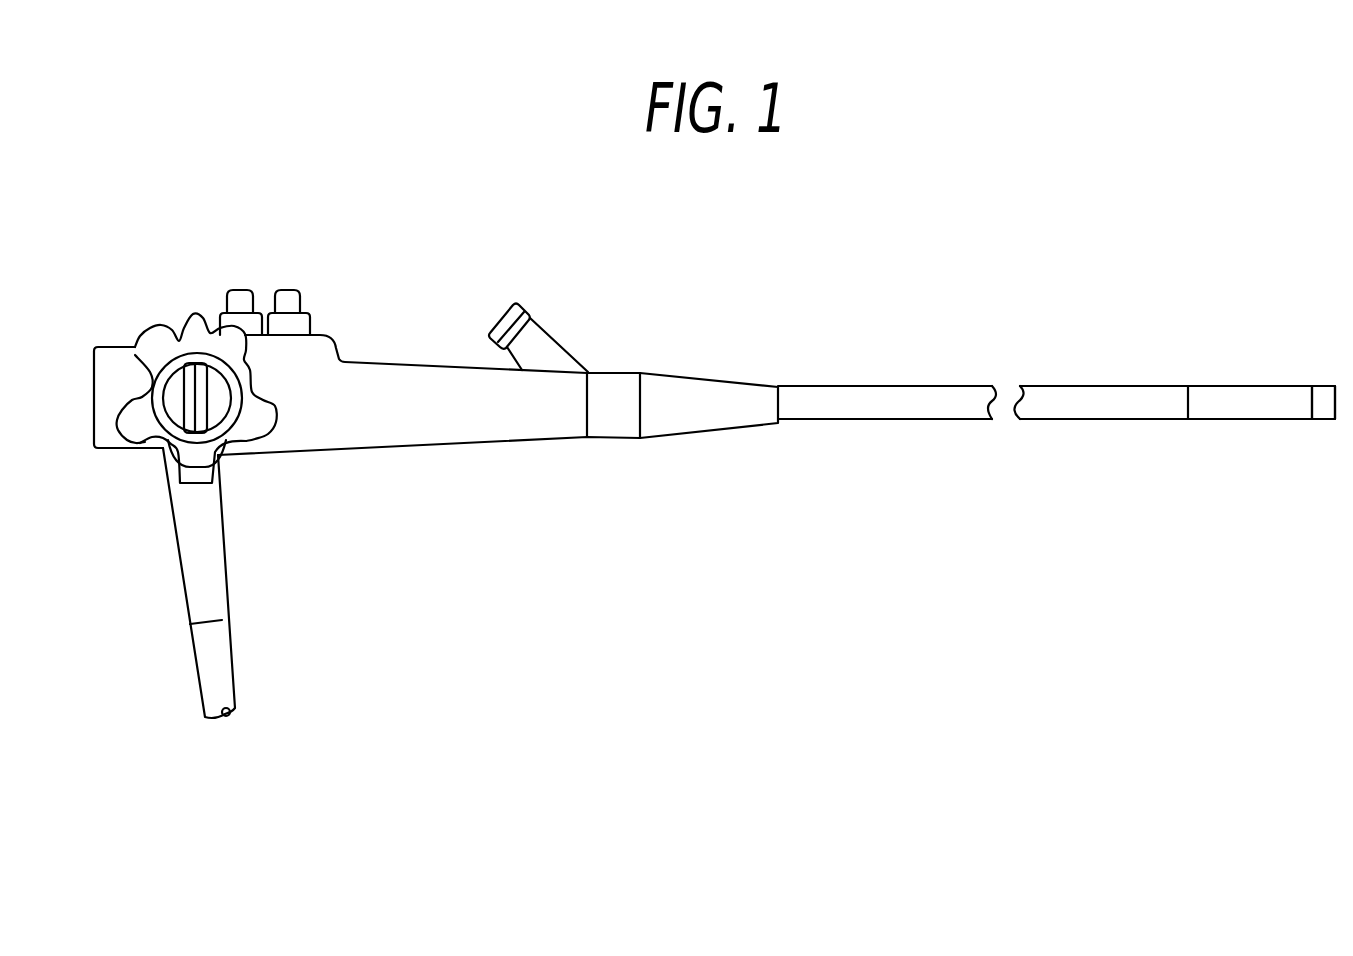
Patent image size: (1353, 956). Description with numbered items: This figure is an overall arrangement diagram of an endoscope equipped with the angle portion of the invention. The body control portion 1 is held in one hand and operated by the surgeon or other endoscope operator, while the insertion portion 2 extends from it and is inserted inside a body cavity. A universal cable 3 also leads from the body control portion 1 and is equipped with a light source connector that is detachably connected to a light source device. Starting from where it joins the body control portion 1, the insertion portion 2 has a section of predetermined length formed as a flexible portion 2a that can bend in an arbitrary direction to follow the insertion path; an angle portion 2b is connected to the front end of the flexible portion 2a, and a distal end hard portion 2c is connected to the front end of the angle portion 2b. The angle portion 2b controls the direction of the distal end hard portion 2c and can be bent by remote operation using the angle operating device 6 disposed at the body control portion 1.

The body control portion 1 is at (371, 428).
The insertion portion 2 is at (1174, 400).
The flexible portion 2a is at (1063, 410).
The angle portion 2b is at (1200, 395).
The distal end hard portion 2c is at (1323, 403).
The universal cable 3 is at (188, 567).
The angle operating device 6 is at (177, 387).